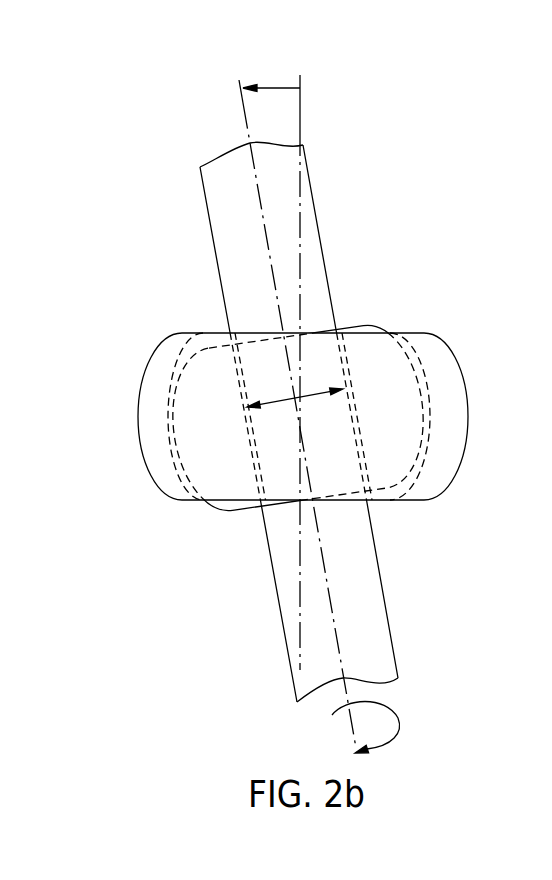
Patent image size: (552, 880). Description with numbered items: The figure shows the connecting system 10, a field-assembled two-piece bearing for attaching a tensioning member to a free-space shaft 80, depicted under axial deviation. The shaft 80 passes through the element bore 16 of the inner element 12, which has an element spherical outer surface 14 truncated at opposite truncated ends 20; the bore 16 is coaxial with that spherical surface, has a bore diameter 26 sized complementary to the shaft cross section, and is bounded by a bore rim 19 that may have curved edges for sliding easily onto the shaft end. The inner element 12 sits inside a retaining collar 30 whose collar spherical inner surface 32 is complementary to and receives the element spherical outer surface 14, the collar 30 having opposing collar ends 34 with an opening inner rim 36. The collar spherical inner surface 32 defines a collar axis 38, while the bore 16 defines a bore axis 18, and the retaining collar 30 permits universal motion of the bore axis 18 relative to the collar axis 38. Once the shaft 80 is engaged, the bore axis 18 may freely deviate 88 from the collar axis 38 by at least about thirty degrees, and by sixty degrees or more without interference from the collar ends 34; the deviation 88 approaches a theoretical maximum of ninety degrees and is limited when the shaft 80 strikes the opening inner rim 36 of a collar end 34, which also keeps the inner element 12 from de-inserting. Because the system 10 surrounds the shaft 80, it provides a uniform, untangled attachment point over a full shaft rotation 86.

The connecting system 10 is at (395, 98).
The inner element 12 is at (223, 473).
The element spherical outer surface 14 is at (173, 462).
The element bore 16 is at (280, 483).
The bore axis 18 is at (243, 103).
The bore rim 19 is at (227, 333).
The truncated ends 20 is at (318, 330).
The bore diameter 26 is at (308, 393).
The retaining collar 30 is at (147, 408).
The collar spherical inner surface 32 is at (172, 448).
The collar ends 34 is at (193, 333).
The opening inner rim 36 is at (208, 333).
The collar axis 38 is at (300, 103).
The free-space shaft 80 is at (388, 613).
The shaft rotation 86 is at (400, 723).
The axial deviation 88 is at (298, 87).